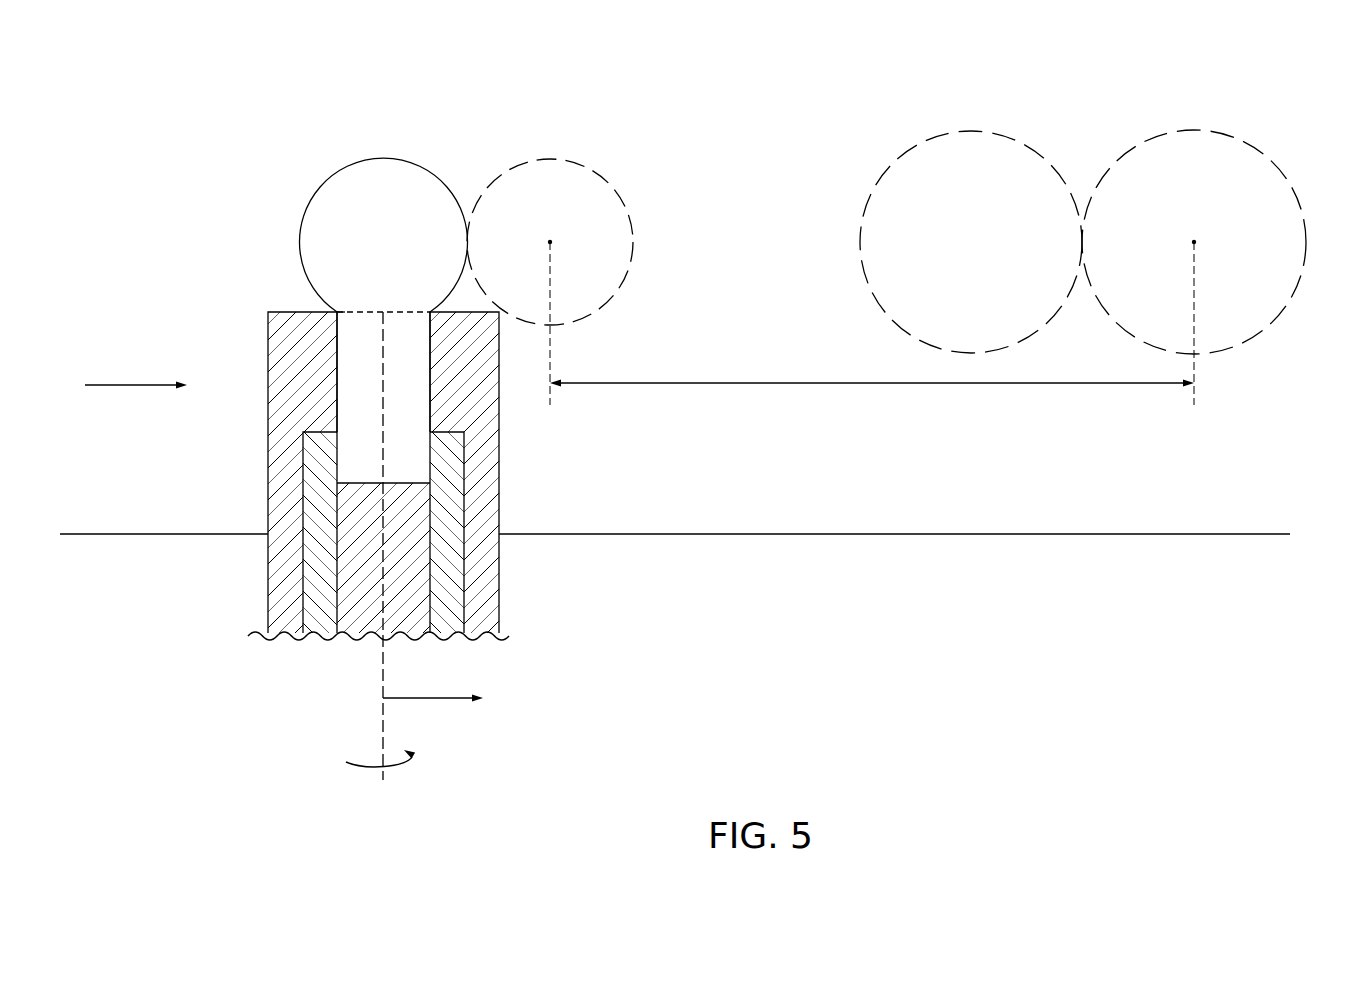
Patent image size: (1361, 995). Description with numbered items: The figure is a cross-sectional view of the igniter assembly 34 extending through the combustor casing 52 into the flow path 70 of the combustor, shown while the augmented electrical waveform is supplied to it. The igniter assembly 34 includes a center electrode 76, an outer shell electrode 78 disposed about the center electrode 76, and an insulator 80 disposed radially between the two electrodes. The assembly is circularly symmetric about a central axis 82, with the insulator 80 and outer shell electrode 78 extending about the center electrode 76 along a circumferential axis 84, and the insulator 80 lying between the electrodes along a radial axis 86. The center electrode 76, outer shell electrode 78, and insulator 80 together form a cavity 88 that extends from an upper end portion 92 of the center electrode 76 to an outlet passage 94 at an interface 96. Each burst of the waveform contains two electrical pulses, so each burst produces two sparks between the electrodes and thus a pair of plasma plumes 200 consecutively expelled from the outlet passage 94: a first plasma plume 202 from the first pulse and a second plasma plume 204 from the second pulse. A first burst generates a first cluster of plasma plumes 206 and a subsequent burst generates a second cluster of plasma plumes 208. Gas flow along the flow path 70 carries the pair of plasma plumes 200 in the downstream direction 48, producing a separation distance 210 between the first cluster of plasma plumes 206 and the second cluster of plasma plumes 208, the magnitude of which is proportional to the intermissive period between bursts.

The igniter assembly 34 is at (236, 603).
The downstream direction 48 is at (126, 383).
The combustor casing 52 is at (873, 537).
The flow path 70 is at (696, 443).
The center electrode 76 is at (410, 553).
The outer shell electrode 78 is at (483, 477).
The insulator 80 is at (452, 510).
The central axis 82 is at (385, 727).
The circumferential axis 84 is at (415, 762).
The radial axis 86 is at (445, 697).
The cavity 88 is at (346, 417).
The upper end portion 92 is at (342, 470).
The outlet passage 94 is at (346, 336).
The interface 96 is at (362, 310).
The pair of plasma plumes 200 is at (574, 134).
The first plasma plume 202 is at (530, 221).
The second plasma plume 204 is at (363, 256).
The first cluster of plasma plumes 206 is at (1240, 123).
The second cluster of plasma plumes 208 is at (650, 186).
The separation distance 210 is at (875, 386).